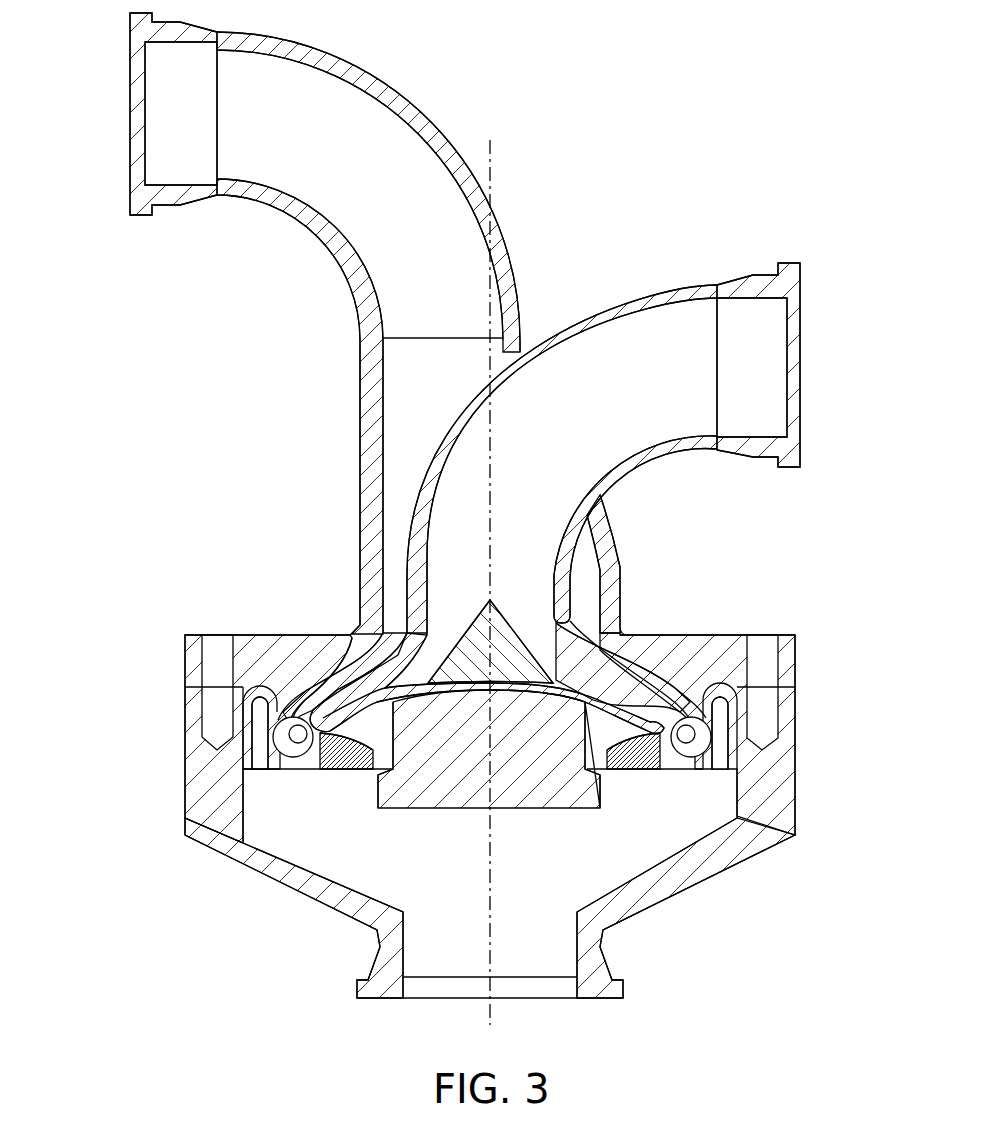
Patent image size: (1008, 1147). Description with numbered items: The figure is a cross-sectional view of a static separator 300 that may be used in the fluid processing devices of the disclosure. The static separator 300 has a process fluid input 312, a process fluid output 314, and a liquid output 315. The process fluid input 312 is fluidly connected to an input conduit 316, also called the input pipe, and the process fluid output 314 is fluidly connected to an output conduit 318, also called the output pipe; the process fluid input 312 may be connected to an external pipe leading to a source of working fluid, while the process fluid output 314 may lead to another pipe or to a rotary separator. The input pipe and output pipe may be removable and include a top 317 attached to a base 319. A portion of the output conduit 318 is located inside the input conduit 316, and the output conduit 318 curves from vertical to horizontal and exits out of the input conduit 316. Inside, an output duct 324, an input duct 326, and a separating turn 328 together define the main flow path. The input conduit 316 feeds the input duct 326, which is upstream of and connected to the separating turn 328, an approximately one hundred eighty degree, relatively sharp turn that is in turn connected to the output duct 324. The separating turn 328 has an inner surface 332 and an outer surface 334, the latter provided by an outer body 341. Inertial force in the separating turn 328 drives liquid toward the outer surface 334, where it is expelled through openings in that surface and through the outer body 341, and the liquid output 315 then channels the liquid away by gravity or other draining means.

The static separator 300 is at (586, 80).
The process fluid input 312 is at (130, 145).
The process fluid output 314 is at (800, 352).
The liquid output 315 is at (367, 827).
The input conduit 316 is at (437, 120).
The top 317 is at (692, 643).
The output conduit 318 is at (655, 290).
The base 319 is at (780, 773).
The output duct 324 is at (380, 692).
The input duct 326 is at (353, 670).
The separating turn 328 is at (280, 748).
The inner surface 332 is at (280, 733).
The outer surface 334 is at (293, 757).
The outer body 341 is at (320, 752).